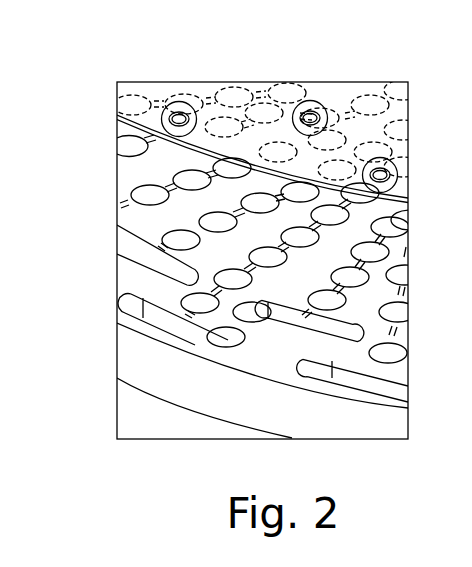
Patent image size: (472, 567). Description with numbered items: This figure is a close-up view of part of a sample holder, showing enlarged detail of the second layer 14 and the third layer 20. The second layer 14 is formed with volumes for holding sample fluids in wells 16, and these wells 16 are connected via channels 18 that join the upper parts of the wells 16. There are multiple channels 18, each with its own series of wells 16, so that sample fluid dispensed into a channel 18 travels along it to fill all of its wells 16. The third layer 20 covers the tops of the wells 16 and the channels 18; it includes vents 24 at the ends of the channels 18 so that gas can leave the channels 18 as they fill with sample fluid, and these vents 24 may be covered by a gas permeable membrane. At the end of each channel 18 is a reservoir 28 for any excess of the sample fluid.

The second layer 14 is at (127, 177).
The wells 16 is at (232, 333).
The channels 18 is at (124, 205).
The third layer 20 is at (150, 88).
The vents 24 is at (179, 113).
The reservoir 28 is at (140, 312).